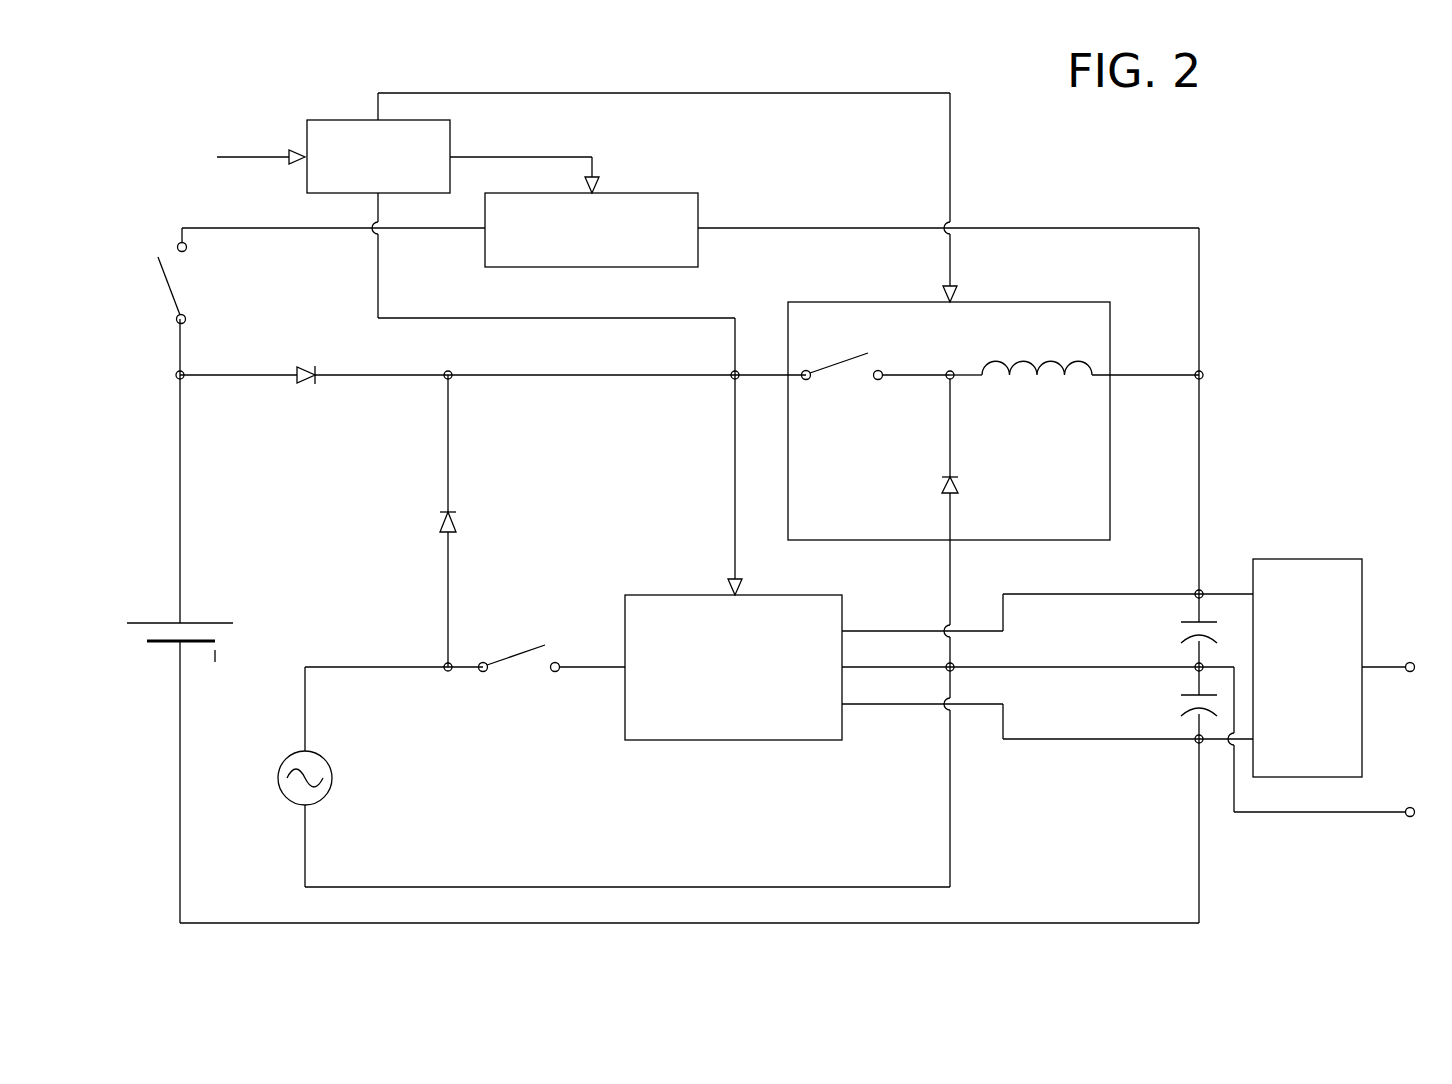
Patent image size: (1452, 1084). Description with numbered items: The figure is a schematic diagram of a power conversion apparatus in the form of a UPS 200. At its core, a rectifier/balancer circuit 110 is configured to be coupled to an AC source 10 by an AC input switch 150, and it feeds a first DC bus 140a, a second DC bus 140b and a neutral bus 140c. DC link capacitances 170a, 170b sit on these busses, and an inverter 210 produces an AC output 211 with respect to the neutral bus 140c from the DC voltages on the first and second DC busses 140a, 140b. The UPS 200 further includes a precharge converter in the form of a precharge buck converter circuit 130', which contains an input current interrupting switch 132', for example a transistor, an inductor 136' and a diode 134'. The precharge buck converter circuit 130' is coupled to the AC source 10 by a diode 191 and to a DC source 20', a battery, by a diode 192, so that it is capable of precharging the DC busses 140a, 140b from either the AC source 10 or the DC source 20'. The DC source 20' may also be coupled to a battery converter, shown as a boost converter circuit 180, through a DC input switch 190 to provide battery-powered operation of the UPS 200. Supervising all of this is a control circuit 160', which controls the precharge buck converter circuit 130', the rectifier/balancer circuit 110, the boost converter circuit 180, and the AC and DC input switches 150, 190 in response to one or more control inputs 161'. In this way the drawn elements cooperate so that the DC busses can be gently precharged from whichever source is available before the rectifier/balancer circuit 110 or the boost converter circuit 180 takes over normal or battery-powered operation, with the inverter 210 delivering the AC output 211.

The UPS 200 is at (1204, 163).
The control inputs 161' is at (218, 134).
The control circuit 160' is at (326, 161).
The boost converter circuit 180 is at (628, 192).
The DC input switch 190 is at (213, 285).
The diode 191 is at (322, 417).
The diode 192 is at (485, 502).
The DC source 20' is at (214, 605).
The AC input switch 150 is at (510, 681).
The AC source 10 is at (330, 775).
The rectifier/balancer circuit 110 is at (735, 742).
The first DC bus 140a is at (1092, 592).
The second DC bus 140b is at (1092, 741).
The neutral bus 140c is at (1003, 665).
The DC link capacitance 170a is at (1161, 618).
The DC link capacitance 170b is at (1162, 686).
The inverter 210 is at (1308, 558).
The AC output 211 is at (1390, 663).
The precharge buck converter circuit 130' is at (949, 397).
The input current interrupting switch 132' is at (876, 393).
The diode 134' is at (1008, 439).
The inductor 136' is at (1074, 402).